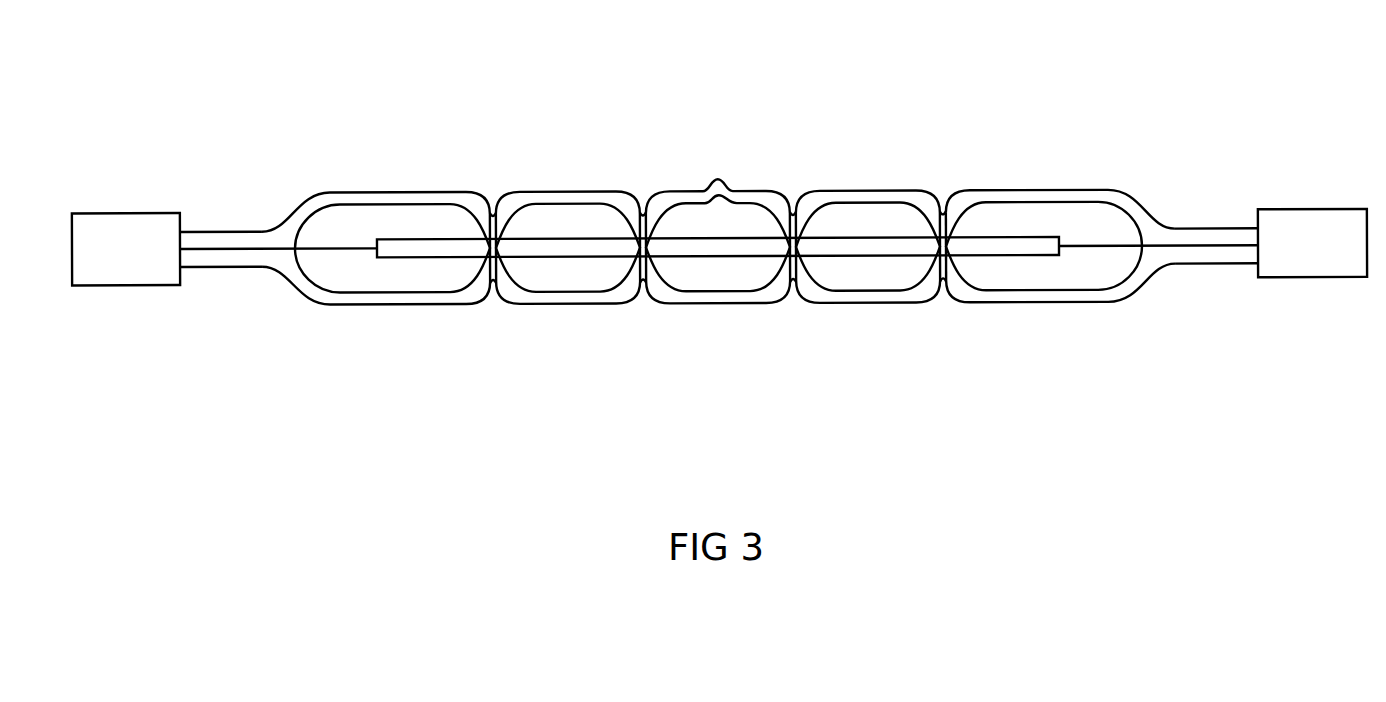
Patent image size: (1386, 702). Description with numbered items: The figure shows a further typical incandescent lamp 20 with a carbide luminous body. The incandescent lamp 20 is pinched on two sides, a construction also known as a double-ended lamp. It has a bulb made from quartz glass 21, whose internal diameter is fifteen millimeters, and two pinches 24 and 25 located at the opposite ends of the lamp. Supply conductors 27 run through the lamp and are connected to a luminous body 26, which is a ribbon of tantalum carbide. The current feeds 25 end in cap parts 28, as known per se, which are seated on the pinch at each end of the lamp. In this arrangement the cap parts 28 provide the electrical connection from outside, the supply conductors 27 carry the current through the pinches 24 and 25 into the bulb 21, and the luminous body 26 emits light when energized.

The incandescent lamp 20 is at (718, 239).
The bulb made from quartz glass 21 is at (868, 184).
The pinch 24 is at (230, 230).
The pinch 25 is at (1208, 229).
The luminous body 26 is at (574, 268).
The supply conductors 27 is at (338, 249).
The cap parts 28 is at (124, 247).